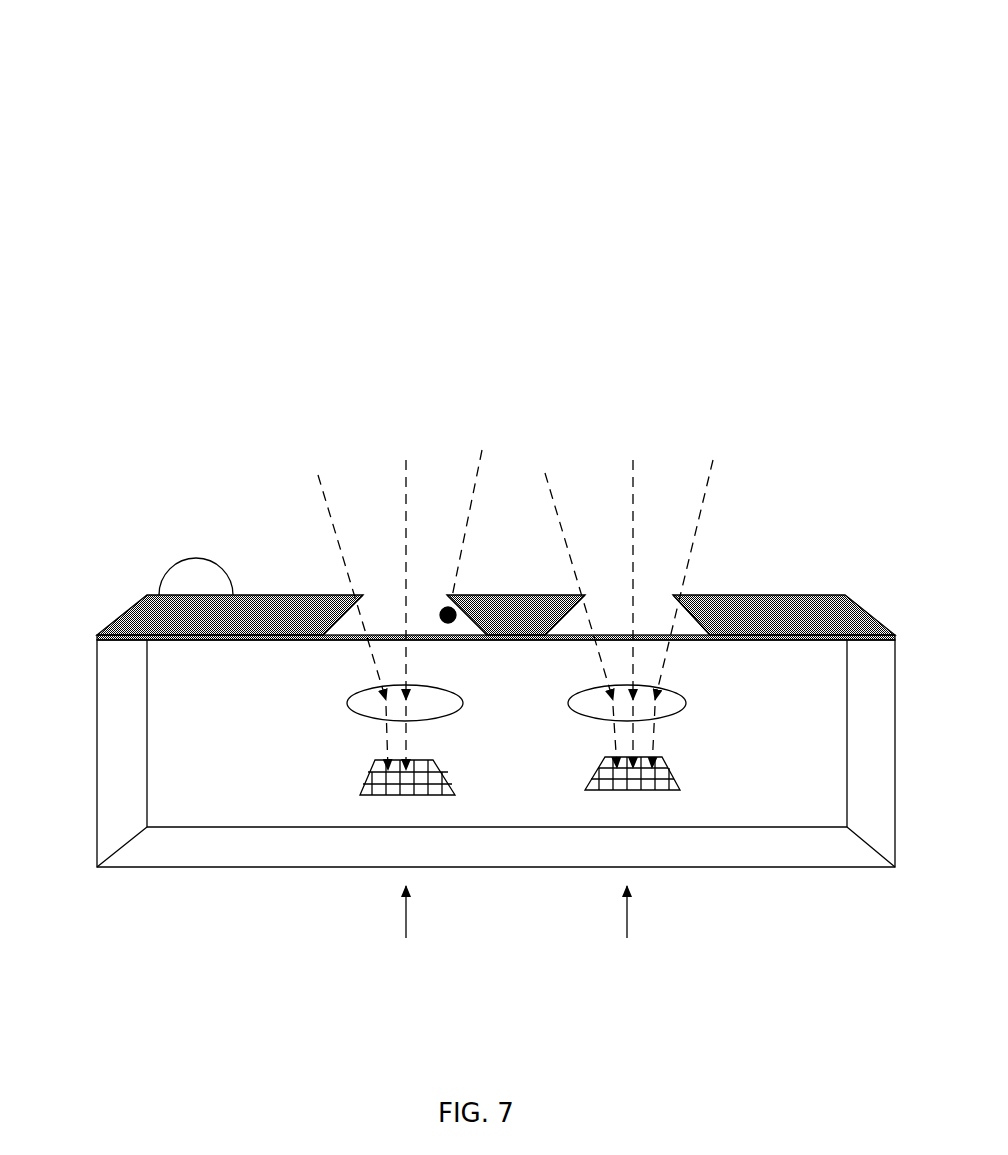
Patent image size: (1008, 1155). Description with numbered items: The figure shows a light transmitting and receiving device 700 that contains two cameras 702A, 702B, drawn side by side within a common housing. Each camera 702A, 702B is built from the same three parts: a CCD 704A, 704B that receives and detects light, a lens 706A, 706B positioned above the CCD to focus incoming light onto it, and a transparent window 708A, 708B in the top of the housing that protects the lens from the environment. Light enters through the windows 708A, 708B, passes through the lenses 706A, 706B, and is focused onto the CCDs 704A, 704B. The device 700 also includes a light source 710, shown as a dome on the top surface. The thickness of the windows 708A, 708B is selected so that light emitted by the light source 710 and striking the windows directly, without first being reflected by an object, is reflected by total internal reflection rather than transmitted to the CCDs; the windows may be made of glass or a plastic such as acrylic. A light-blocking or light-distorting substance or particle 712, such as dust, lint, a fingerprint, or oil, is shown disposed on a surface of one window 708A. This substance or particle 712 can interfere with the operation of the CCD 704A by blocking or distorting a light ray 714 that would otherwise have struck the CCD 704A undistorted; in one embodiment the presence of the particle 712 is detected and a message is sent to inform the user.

The device 700 is at (95, 125).
The camera 702A is at (409, 938).
The camera 702B is at (621, 938).
The CCD 704A is at (378, 762).
The CCD 704B is at (663, 760).
The lens 706A is at (347, 703).
The lens 706B is at (687, 700).
The window 708A is at (345, 598).
The window 708B is at (688, 622).
The light source 710 is at (193, 560).
The substance or particle 712 is at (449, 605).
The light ray 714 is at (482, 450).